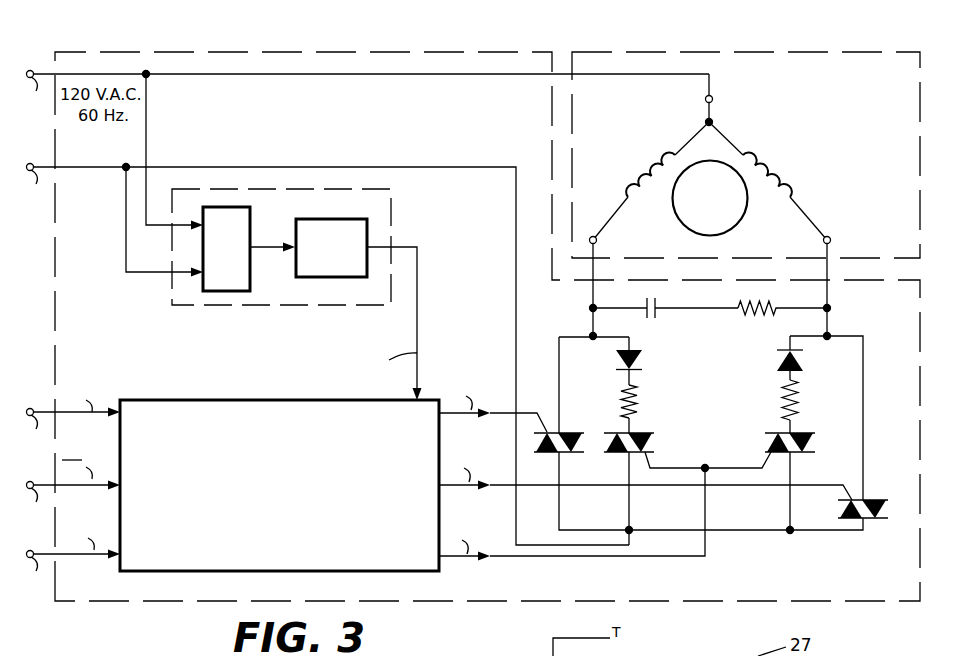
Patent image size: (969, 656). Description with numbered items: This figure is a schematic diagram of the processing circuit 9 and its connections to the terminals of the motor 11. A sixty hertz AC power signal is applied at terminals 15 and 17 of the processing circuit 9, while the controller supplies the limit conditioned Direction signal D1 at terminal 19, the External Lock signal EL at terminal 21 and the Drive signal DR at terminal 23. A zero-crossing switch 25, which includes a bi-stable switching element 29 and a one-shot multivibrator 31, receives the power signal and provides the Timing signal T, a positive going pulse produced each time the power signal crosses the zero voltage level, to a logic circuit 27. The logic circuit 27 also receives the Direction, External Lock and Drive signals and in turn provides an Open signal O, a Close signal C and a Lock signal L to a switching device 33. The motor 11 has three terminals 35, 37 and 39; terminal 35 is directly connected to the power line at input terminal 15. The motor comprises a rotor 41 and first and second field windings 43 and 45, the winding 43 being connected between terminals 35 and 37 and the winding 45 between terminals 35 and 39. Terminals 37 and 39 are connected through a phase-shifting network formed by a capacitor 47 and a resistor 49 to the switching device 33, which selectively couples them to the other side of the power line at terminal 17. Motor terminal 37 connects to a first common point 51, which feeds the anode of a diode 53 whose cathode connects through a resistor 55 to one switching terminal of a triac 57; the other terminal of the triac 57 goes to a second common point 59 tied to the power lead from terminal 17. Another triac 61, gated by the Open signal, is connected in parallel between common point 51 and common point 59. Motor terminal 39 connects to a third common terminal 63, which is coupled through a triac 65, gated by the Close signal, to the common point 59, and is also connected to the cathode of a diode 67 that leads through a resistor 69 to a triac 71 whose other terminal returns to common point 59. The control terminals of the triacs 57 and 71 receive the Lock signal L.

The processing circuit 9 is at (186, 48).
The motor 11 is at (827, 48).
The terminal 15 is at (364, 150).
The terminal 17 is at (324, 355).
The terminal 19 is at (69, 424).
The terminal 21 is at (69, 491).
The terminal 23 is at (70, 565).
The zero-crossing switch 25 is at (395, 207).
The logic circuit 27 is at (295, 487).
The bi-stable switching element 29 is at (240, 247).
The one-shot multivibrator 31 is at (318, 218).
The switching device 33 is at (735, 412).
The terminal 35 is at (713, 99).
The terminal 37 is at (597, 240).
The terminal 39 is at (830, 237).
The rotor 41 is at (732, 221).
The first field winding 43 is at (653, 168).
The second field winding 45 is at (772, 172).
The capacitor 47 is at (649, 314).
The resistor 49 is at (760, 313).
The first common point 51 is at (617, 420).
The diode 53 is at (641, 361).
The resistor 55 is at (624, 398).
The triac 57 is at (656, 443).
The second common point 59 is at (628, 529).
The triac 61 is at (578, 431).
The third common terminal 63 is at (767, 414).
The triac 65 is at (870, 498).
The diode 67 is at (782, 360).
The resistor 69 is at (799, 401).
The triac 71 is at (771, 447).